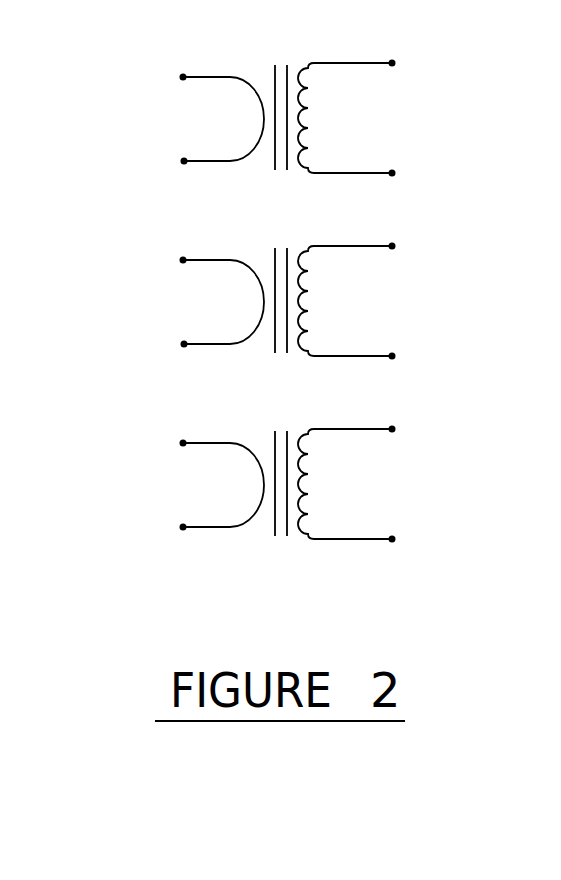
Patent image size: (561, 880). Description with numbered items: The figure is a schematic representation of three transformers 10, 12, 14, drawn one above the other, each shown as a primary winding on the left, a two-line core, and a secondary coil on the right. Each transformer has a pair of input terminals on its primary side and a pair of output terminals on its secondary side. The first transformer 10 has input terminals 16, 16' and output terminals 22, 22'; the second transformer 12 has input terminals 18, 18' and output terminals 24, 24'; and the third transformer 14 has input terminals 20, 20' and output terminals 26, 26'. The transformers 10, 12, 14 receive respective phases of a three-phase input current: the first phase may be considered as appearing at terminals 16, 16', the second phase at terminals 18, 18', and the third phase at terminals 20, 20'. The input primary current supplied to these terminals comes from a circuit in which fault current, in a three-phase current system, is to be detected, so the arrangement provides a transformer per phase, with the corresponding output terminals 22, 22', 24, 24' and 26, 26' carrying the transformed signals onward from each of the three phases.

The transformer 10 is at (365, 118).
The transformer 12 is at (365, 311).
The transformer 14 is at (372, 486).
The input terminal 16 is at (155, 76).
The input terminal 16' is at (155, 174).
The input terminal 18 is at (159, 261).
The input terminal 18' is at (159, 353).
The input terminal 20 is at (155, 441).
The input terminal 20' is at (157, 523).
The output terminal 22 is at (455, 44).
The output terminal 22' is at (461, 182).
The output terminal 24 is at (456, 260).
The output terminal 24' is at (465, 353).
The output terminal 26 is at (462, 442).
The output terminal 26' is at (466, 541).